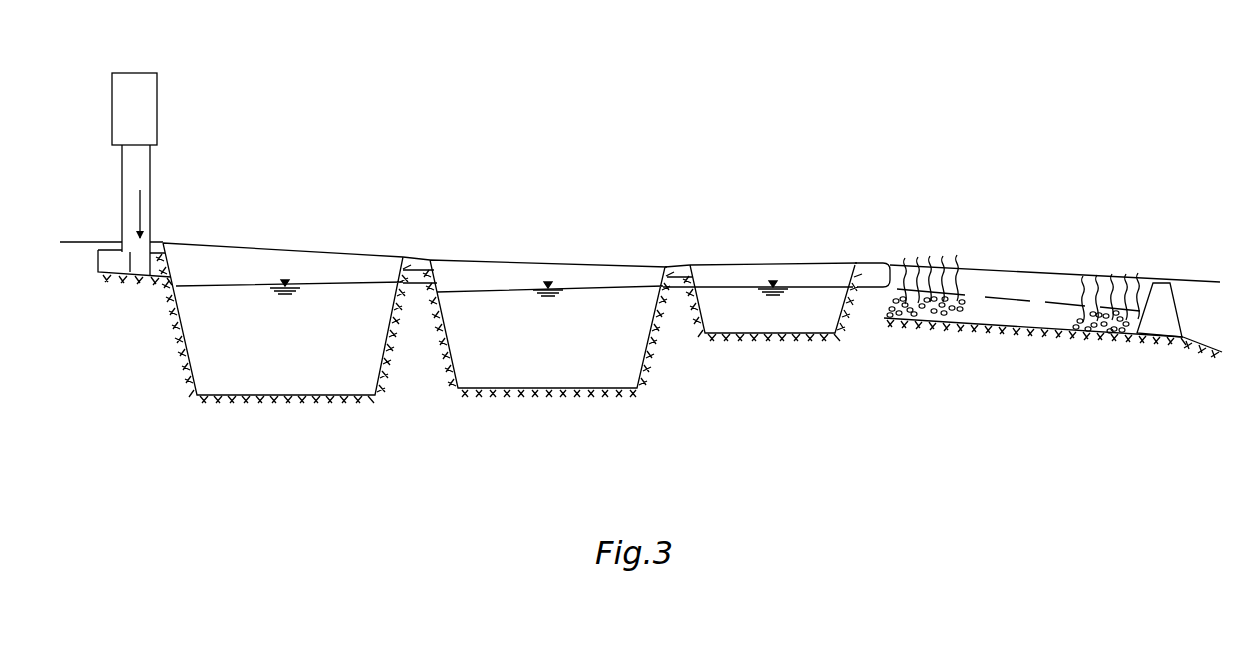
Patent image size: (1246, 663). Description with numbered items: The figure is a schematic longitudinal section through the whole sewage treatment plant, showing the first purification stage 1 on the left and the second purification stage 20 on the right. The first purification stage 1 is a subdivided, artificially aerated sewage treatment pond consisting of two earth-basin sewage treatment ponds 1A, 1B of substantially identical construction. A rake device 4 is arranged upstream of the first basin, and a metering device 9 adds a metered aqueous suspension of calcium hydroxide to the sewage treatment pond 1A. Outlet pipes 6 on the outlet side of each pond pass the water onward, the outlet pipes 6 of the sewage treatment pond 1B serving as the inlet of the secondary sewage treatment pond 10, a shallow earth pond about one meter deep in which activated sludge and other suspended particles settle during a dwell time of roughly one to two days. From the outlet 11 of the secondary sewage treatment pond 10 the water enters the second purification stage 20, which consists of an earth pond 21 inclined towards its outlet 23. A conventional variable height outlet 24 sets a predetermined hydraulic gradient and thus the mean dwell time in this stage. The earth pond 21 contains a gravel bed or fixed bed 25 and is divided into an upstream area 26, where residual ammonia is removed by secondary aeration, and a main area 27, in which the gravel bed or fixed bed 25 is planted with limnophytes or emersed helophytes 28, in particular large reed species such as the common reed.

The first purification stage 1 is at (378, 172).
The sewage treatment pond 1A is at (257, 272).
The sewage treatment pond 1B is at (556, 272).
The rake device 4 is at (138, 275).
The outlet pipes 6 is at (414, 272).
The metering device 9 is at (140, 106).
The secondary sewage treatment pond 10 is at (803, 278).
The outlet 11 is at (872, 280).
The second purification stage 20 is at (1062, 182).
The earth pond 21 is at (1020, 337).
The outlet 23 is at (1152, 363).
The variable height outlet 24 is at (1160, 303).
The gravel bed or fixed bed 25 is at (920, 323).
The upstream area 26 is at (900, 262).
The main area 27 is at (1047, 270).
The limnophytes or emersed helophytes 28 is at (963, 270).